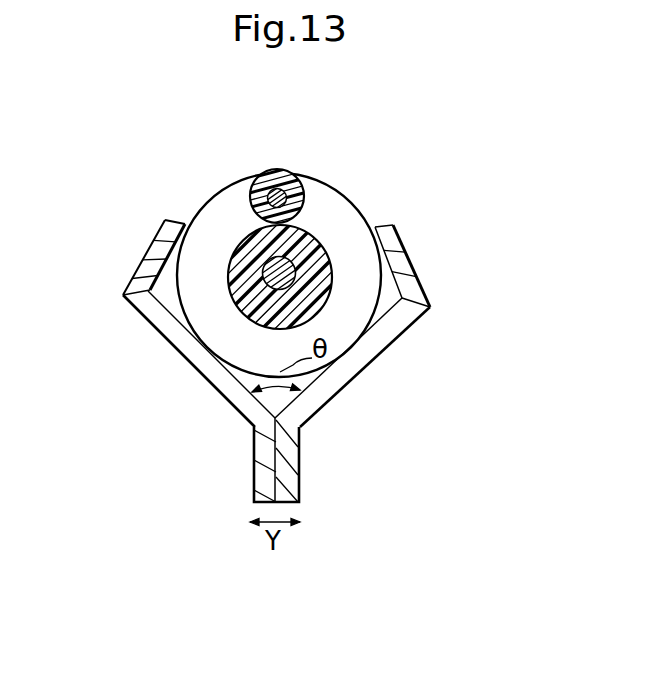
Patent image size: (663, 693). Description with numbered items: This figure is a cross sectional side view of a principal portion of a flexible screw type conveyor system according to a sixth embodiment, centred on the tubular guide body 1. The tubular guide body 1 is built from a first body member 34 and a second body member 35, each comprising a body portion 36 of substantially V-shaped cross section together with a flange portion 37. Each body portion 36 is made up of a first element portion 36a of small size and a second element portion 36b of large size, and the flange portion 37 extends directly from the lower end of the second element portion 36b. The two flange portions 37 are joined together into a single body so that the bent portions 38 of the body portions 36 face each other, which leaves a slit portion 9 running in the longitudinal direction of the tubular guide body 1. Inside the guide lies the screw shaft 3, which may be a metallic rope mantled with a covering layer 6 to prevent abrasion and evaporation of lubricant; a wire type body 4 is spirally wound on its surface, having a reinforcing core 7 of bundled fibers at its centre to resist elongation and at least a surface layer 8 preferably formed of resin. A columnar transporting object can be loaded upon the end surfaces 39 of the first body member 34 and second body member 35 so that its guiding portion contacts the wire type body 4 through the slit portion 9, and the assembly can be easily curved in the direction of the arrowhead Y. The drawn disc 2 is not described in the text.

The tubular guide body 1 is at (279, 333).
The rotary disc 2 is at (367, 265).
The screw shaft 3 is at (274, 268).
The wire type body 4 is at (306, 170).
The covering layer 6 is at (148, 320).
The reinforcing core 7 is at (276, 185).
The surface layer 8 is at (309, 191).
The slit portion 9 is at (353, 245).
The first body member 34 is at (150, 340).
The second body member 35 is at (390, 360).
The body portion 36 is at (165, 345).
The first element portion 36a is at (147, 253).
The second element portion 36b is at (192, 362).
The flange portion 37 is at (255, 458).
The bent portion 38 is at (157, 303).
The end surface 39 is at (172, 222).